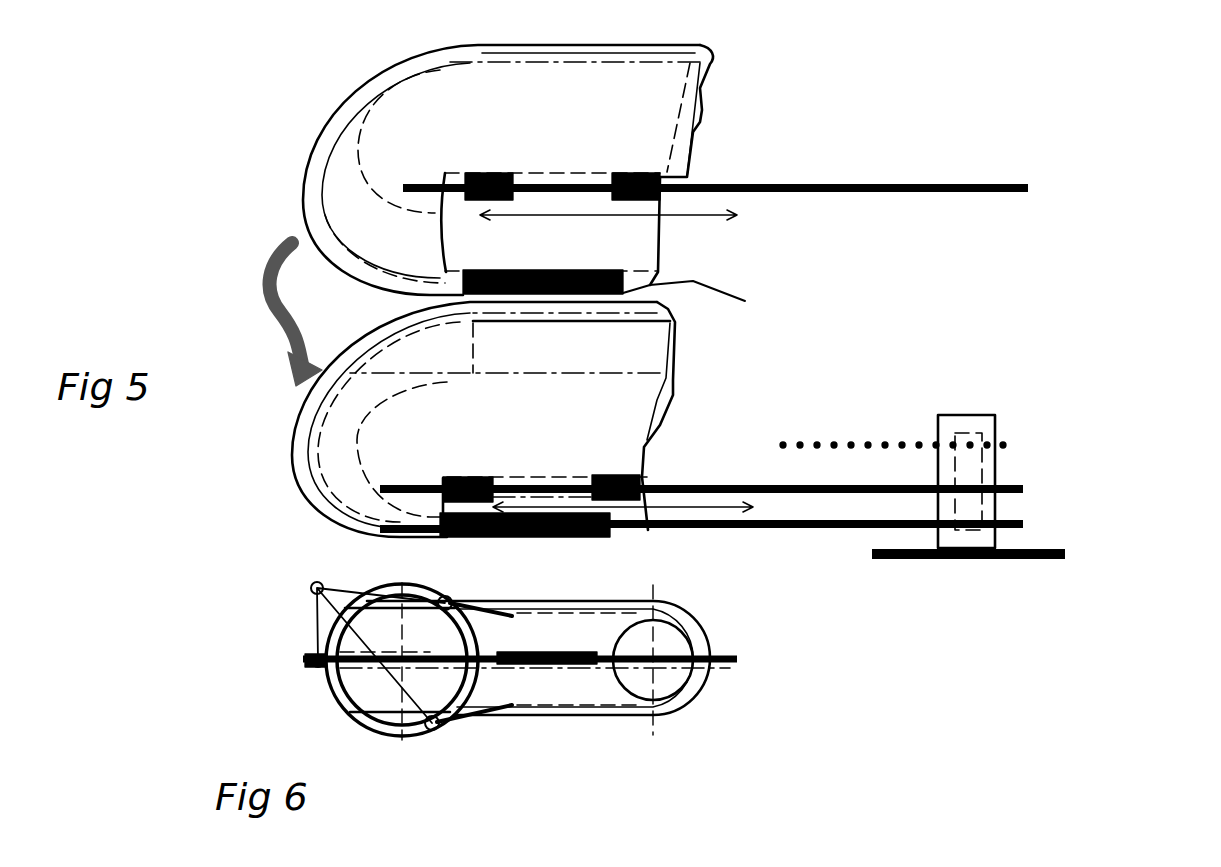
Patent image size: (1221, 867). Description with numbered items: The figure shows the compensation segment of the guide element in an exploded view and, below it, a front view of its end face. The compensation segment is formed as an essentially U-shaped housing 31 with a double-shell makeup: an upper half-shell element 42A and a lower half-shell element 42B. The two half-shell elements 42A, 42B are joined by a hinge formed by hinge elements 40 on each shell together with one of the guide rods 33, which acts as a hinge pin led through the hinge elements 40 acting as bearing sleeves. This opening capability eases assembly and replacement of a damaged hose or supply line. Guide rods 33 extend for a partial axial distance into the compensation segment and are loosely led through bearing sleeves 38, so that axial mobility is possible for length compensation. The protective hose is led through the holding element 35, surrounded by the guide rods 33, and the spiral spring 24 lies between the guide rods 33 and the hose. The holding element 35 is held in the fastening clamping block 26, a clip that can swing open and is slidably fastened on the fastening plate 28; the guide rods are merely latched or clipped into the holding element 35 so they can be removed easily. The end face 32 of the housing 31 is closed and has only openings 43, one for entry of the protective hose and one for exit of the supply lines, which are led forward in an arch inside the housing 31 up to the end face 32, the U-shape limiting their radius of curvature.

In FIG. 5, the housing 31 is at (270, 240).
In FIG. 5, the upper half-shell element 42A is at (583, 100).
In FIG. 6, the upper half-shell element 42A is at (683, 617).
In FIG. 5, the lower half-shell element 42B is at (546, 407).
In FIG. 6, the lower half-shell element 42B is at (693, 700).
In FIG. 5, the bearing sleeves 38 is at (515, 183).
In FIG. 5, the hinge elements 40 is at (640, 288).
In FIG. 5, the guide rods 33 is at (940, 190).
In FIG. 6, the guide rods 33 is at (498, 640).
In FIG. 5, the fastening clamping block 26 is at (995, 415).
In FIG. 5, the spiral spring 24 is at (1018, 448).
In FIG. 5, the fastening plate 28 is at (872, 555).
In FIG. 5, the holding element 35 is at (977, 530).
In FIG. 6, the end face 32 is at (577, 683).
In FIG. 6, the openings 43 is at (378, 687).